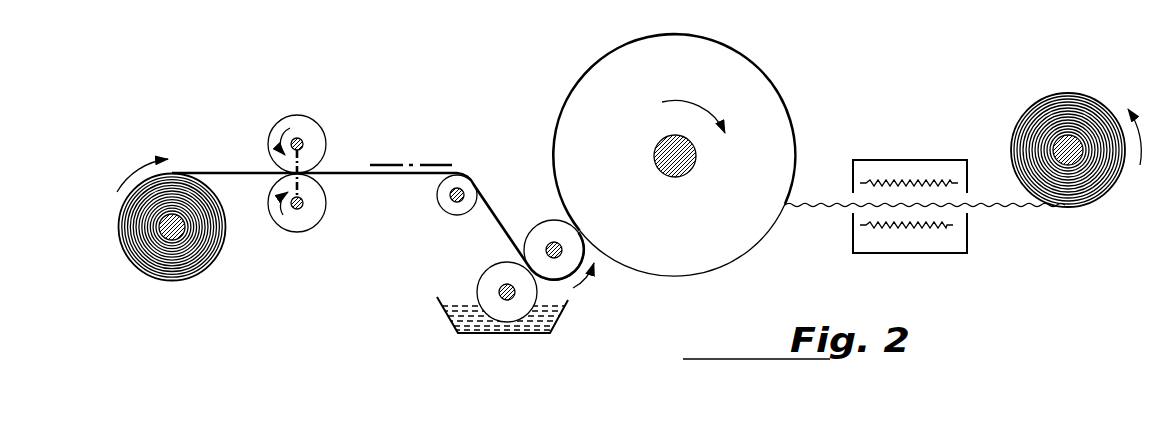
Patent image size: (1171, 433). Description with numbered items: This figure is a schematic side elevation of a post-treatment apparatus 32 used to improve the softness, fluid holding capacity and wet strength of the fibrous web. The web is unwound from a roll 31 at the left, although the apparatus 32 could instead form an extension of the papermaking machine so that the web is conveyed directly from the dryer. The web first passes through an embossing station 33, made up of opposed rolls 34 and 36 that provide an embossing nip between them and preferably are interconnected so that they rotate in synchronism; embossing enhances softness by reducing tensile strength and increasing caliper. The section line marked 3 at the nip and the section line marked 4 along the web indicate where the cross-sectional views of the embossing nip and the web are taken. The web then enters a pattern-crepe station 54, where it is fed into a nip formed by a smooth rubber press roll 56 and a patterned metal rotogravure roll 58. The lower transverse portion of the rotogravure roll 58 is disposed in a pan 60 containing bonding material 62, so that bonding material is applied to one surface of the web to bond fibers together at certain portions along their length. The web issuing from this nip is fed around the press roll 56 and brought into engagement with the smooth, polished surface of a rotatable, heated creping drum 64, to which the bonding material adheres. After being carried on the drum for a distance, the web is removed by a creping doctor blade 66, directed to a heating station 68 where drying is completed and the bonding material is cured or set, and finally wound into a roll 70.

The roll 31 is at (195, 257).
The post-treatment apparatus 32 is at (338, 52).
The embossing station 33 is at (252, 140).
The roll 34 is at (304, 125).
The roll 36 is at (296, 232).
The section line 3- 3 is at (312, 154).
The section line 4- 4 is at (385, 162).
The pattern-crepe station 54 is at (506, 171).
The smooth rubber press roll 56 is at (546, 230).
The patterned metal rotogravure roll 58 is at (493, 275).
The pan 60 is at (450, 320).
The bonding material 62 is at (548, 319).
The creping drum 64 is at (757, 112).
The creping doctor blade 66 is at (786, 207).
The heating station 68 is at (901, 157).
The roll 70 is at (1065, 115).